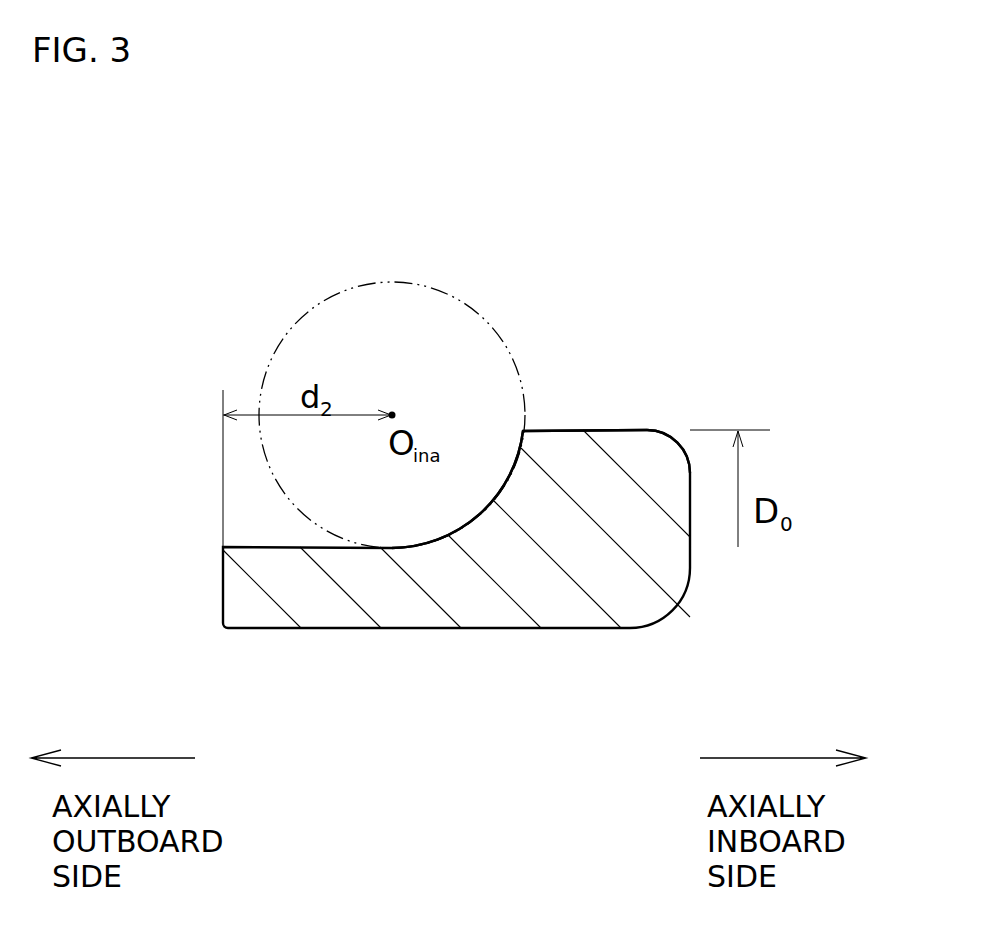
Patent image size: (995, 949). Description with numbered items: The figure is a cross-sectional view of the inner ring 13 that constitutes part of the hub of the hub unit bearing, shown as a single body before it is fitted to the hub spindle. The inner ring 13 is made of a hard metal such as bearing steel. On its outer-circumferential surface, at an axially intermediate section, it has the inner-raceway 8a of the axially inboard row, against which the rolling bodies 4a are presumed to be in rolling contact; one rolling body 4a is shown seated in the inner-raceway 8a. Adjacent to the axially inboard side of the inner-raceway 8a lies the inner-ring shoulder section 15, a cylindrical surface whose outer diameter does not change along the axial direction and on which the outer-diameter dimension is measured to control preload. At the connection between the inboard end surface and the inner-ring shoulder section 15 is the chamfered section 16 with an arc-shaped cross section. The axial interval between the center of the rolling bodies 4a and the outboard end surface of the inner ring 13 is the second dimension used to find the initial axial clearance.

The rolling bodies 4a is at (468, 338).
The inner-raceway 8a is at (468, 528).
The inner ring 13 is at (638, 422).
The inner-ring shoulder section 15 is at (595, 441).
The chamfered section 16 is at (680, 440).